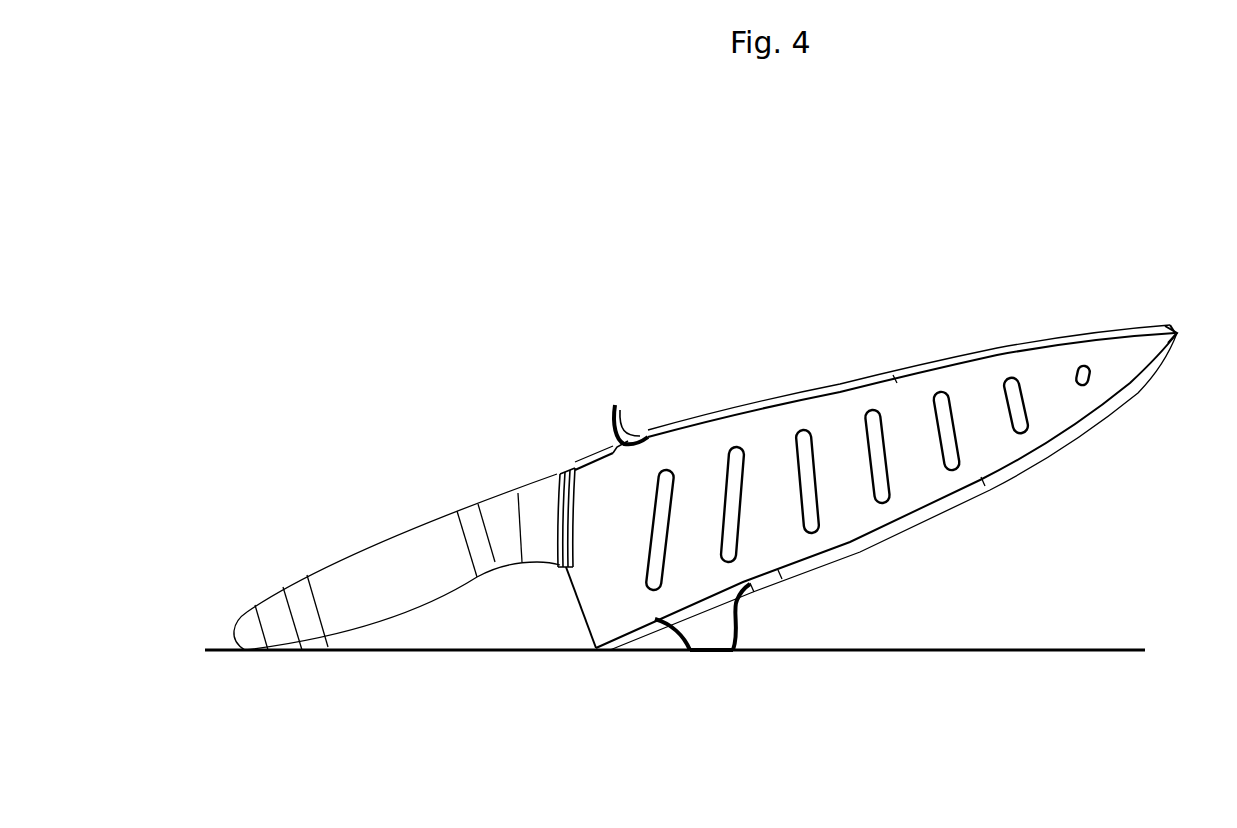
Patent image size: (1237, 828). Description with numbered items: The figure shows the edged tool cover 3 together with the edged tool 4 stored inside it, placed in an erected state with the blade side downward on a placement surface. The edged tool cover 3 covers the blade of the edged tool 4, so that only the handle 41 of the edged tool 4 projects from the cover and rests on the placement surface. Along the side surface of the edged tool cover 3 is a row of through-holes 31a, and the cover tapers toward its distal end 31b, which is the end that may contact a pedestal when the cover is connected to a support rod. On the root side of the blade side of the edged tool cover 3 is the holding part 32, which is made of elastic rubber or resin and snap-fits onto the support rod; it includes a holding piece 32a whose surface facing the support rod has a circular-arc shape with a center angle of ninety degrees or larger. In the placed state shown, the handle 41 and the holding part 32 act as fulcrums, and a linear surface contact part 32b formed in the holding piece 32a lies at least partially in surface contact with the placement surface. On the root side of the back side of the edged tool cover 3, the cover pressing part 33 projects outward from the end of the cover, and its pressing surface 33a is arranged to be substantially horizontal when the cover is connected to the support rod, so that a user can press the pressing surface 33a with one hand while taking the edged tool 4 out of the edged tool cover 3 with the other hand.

The edged tool cover 3 is at (928, 293).
The through-holes 31a is at (1022, 437).
The distal end 31b is at (1178, 340).
The holding part 32 is at (718, 636).
The holding piece 32a is at (742, 618).
The surface contact part 32b is at (693, 652).
The cover pressing part 33 is at (615, 407).
The pressing surface 33a is at (615, 433).
The edged tool 4 is at (390, 503).
The handle 41 is at (343, 570).